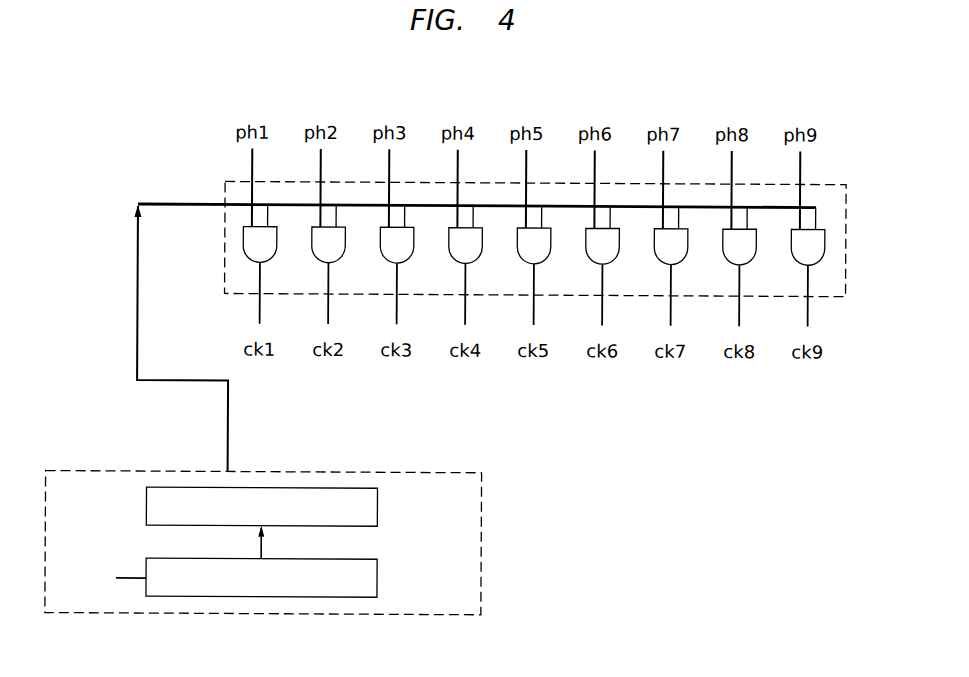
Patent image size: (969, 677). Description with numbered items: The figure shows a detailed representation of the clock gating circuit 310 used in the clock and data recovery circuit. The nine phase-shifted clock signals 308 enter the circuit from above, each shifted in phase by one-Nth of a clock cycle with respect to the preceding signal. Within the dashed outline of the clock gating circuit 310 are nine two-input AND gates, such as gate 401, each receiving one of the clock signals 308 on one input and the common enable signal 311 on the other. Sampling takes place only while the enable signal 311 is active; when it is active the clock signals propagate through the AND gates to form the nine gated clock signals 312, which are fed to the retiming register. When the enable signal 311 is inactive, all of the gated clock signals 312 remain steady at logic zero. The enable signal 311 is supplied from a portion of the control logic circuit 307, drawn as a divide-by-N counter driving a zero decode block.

The control logic circuit 307 is at (473, 578).
The clock signals 308 is at (251, 172).
The clock gating circuit 310 is at (840, 186).
The enable signal 311 is at (137, 328).
The gated clock signals 312 is at (258, 300).
The AND gate 401 is at (800, 262).